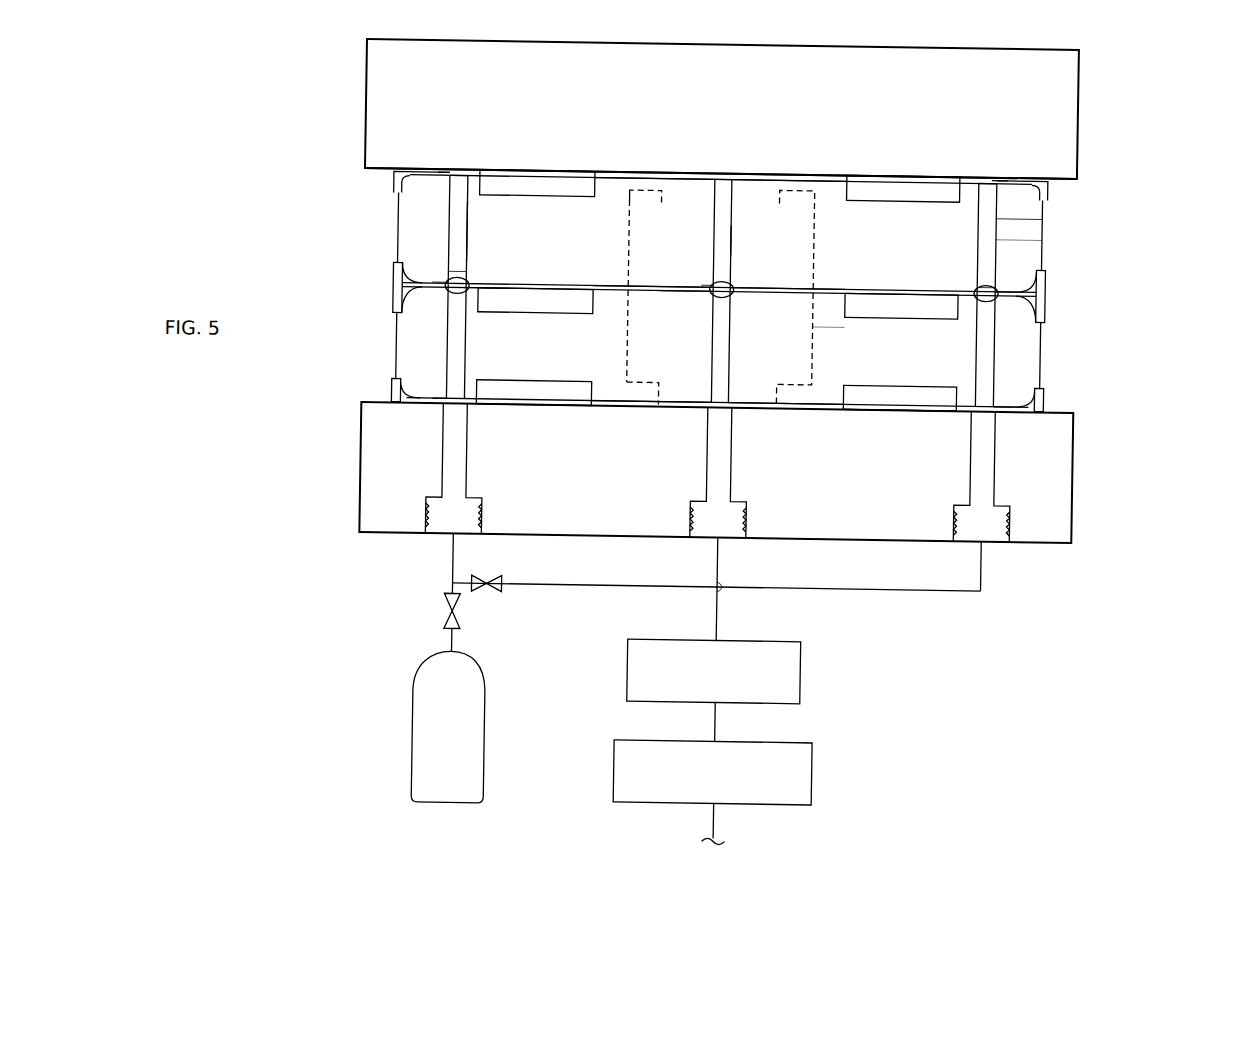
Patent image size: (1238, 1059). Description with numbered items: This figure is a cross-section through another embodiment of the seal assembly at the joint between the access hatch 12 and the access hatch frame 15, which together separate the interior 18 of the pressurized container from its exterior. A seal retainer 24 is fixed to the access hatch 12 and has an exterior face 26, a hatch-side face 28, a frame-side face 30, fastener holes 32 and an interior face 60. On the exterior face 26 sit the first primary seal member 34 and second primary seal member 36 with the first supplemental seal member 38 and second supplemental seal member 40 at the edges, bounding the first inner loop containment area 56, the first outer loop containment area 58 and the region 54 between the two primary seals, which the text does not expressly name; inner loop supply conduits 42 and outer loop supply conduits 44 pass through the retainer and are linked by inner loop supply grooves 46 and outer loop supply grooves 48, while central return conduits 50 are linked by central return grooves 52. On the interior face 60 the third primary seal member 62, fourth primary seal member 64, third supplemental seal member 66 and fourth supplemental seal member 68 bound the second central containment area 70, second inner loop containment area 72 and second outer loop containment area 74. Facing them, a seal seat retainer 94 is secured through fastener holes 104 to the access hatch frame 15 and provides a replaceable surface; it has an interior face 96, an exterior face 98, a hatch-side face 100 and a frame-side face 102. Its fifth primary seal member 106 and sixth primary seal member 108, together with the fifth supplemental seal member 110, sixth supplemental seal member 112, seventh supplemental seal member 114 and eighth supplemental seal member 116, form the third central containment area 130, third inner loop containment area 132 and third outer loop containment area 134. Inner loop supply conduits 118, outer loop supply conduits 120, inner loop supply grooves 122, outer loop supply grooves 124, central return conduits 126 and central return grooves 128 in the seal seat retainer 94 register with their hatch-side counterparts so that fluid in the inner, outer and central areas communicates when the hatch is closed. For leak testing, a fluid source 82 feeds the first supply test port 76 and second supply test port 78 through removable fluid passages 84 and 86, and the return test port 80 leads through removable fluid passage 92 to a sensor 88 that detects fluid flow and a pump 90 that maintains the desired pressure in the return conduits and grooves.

The access hatch 12 is at (573, 489).
The access hatch frame 15 is at (717, 110).
The interior 18 is at (716, 22).
The seal retainer 24 is at (886, 337).
The exterior face 26 is at (912, 412).
The hatch-side face 28 is at (401, 347).
The frame-side face 30 is at (1046, 345).
The fastener holes 32 is at (659, 355).
The first primary seal member 34 is at (545, 378).
The second primary seal member 36 is at (938, 378).
The first supplemental seal member 38 is at (399, 393).
The second supplemental seal member 40 is at (1050, 398).
The inner loop supply conduits 42 is at (471, 346).
The outer loop supply conduits 44 is at (980, 334).
The inner loop supply grooves 46 is at (456, 302).
The outer loop supply grooves 48 is at (996, 300).
The central return conduits 50 is at (735, 344).
The central return grooves 52 is at (735, 300).
The lower plate segment 54 is at (634, 408).
The first inner loop containment area 56 is at (438, 396).
The first outer loop containment area 58 is at (1007, 396).
The interior face 60 is at (769, 284).
The third primary seal member 62 is at (581, 285).
The fourth primary seal member 64 is at (889, 288).
The third supplemental seal member 66 is at (400, 297).
The fourth supplemental seal member 68 is at (1050, 310).
The second central containment area 70 is at (615, 290).
The second inner loop containment area 72 is at (436, 280).
The second outer loop containment area 74 is at (1006, 282).
The first supply test port 76 is at (470, 538).
The second supply test port 78 is at (1000, 538).
The return test port 80 is at (702, 538).
The fluid source 82 is at (748, 180).
The removable fluid passage 84 is at (460, 564).
The removable fluid passage 86 is at (820, 582).
The sensor 88 is at (810, 648).
The pump 90 is at (823, 750).
The removable fluid passage 92 is at (727, 612).
The seal seat retainer 94 is at (940, 246).
The interior face 96 is at (667, 186).
The exterior face 98 is at (677, 292).
The hatch-side face 100 is at (401, 219).
The frame-side face 102 is at (1046, 232).
The fastener holes 104 is at (781, 223).
The fifth primary seal member 106 is at (561, 194).
The sixth primary seal member 108 is at (880, 194).
The fifth supplemental seal member 110 is at (397, 180).
The sixth supplemental seal member 112 is at (1050, 178).
The seventh supplemental seal member 114 is at (400, 273).
The eighth supplemental seal member 116 is at (1050, 277).
The inner loop supply conduits 118 is at (471, 237).
The outer loop supply conduits 120 is at (1000, 209).
The inner loop supply grooves 122 is at (464, 172).
The outer loop supply grooves 124 is at (987, 175).
The central return conduits 126 is at (735, 231).
The central return grooves 128 is at (730, 173).
The third central containment area 130 is at (646, 174).
The third inner loop containment area 132 is at (446, 170).
The third outer loop containment area 134 is at (1006, 174).